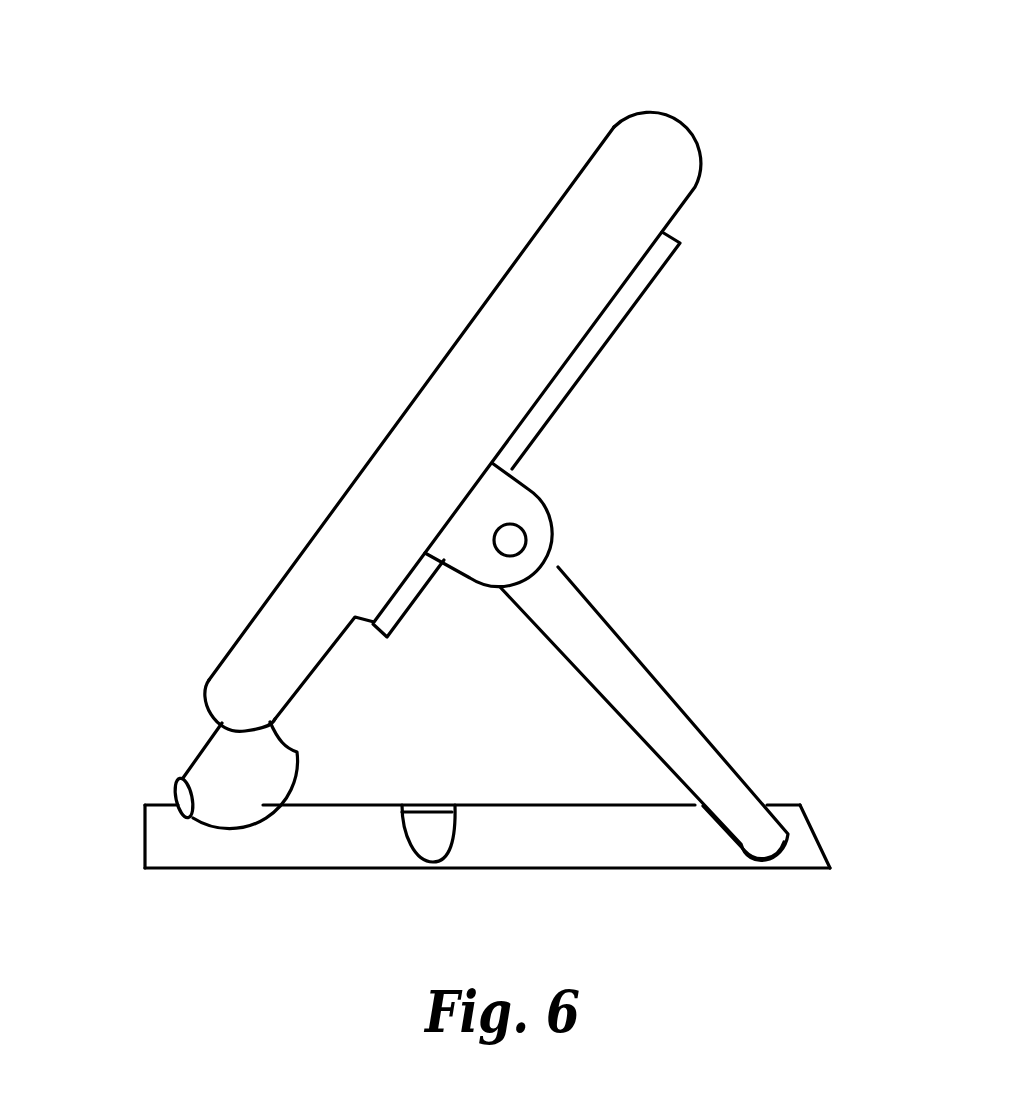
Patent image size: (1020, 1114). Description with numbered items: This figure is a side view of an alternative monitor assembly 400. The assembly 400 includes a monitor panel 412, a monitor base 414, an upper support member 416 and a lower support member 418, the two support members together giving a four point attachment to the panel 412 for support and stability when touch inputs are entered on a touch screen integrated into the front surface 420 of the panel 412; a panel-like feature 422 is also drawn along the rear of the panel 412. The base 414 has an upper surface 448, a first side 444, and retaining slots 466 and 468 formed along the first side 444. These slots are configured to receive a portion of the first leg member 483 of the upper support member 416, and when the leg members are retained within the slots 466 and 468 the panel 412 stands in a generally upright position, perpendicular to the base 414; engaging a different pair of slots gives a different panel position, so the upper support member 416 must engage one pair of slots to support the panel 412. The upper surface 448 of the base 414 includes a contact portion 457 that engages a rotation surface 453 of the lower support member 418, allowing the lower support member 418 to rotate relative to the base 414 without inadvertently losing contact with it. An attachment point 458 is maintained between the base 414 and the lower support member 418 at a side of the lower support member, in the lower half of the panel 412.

The monitor assembly 400 is at (774, 99).
The monitor panel 412 is at (528, 275).
The monitor base 414 is at (487, 835).
The upper support member 416 is at (612, 627).
The lower support member 418 is at (208, 757).
The front surface 420 is at (275, 590).
The rear panel strip 422 is at (613, 337).
The first side 444 is at (645, 850).
The upper surface 448 is at (527, 800).
The rotation surface 453 is at (185, 778).
The contact portion 457 is at (181, 816).
The attachment point 458 is at (213, 820).
The retaining slot 466 is at (437, 847).
The retaining slot 468 is at (788, 845).
The first leg member 483 is at (680, 740).